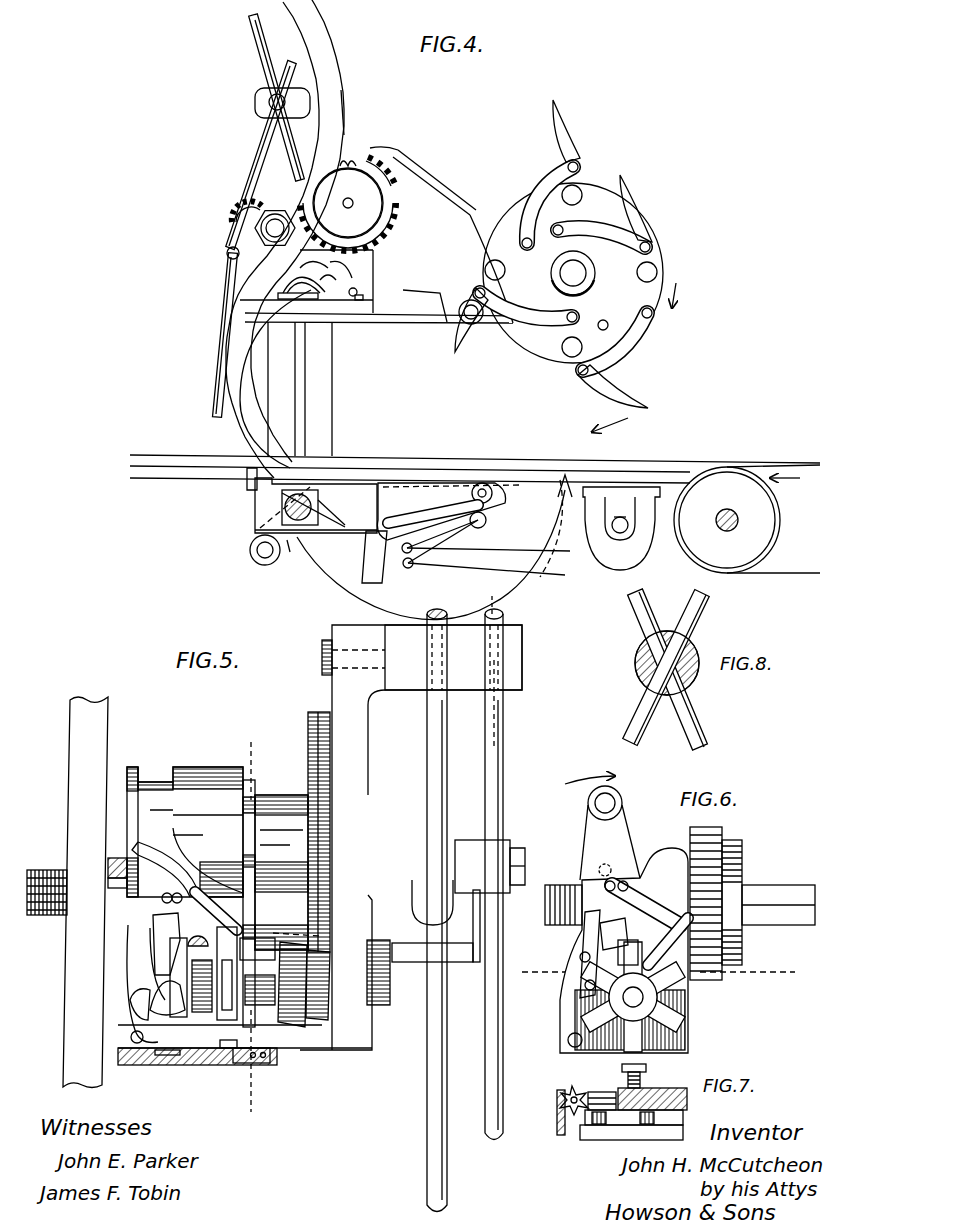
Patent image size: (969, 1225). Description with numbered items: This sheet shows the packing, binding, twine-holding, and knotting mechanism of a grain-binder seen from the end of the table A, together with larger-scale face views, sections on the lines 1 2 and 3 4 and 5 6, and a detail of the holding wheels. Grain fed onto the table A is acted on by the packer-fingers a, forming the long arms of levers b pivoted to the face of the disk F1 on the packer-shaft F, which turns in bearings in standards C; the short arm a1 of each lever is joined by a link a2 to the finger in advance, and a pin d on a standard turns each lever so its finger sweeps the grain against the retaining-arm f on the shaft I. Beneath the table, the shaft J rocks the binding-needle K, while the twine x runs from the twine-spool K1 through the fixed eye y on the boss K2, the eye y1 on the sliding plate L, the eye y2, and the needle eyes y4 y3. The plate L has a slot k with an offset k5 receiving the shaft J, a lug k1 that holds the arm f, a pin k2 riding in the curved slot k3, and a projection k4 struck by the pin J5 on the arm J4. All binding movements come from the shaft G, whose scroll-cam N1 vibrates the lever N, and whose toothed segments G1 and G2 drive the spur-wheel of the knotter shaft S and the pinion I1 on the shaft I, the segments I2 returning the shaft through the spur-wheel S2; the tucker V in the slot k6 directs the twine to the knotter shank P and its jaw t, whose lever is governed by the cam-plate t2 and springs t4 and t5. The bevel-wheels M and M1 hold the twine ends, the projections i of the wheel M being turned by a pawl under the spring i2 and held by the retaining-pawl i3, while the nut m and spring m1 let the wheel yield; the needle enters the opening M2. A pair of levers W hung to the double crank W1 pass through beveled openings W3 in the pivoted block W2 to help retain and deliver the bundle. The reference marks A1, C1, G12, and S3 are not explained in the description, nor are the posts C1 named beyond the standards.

In FIG. 4, the table A is at (475, 457).
In FIG. 4, the belt pulley A1 is at (747, 510).
In FIG. 4, the twine-spool K1 is at (621, 528).
In FIG. 4, the retaining-arm f is at (283, 239).
In FIG. 5, the retaining-arm f is at (85, 892).
In FIG. 4, the levers W is at (248, 216).
In FIG. 5, the levers W is at (459, 910).
In FIG. 8, the levers W is at (663, 669).
In FIG. 4, the shaft G is at (348, 203).
In FIG. 5, the shaft G is at (249, 903).
In FIG. 4, the toothed segment G1 is at (348, 189).
In FIG. 5, the toothed segment G1 is at (310, 832).
In FIG. 4, the scroll-cam N1 is at (348, 203).
In FIG. 5, the scroll-cam N1 is at (175, 832).
In FIG. 4, the toothed segment G2 is at (378, 199).
In FIG. 4, the shaft I is at (263, 223).
In FIG. 5, the shaft I is at (45, 870).
In FIG. 6, the shaft I is at (534, 905).
In FIG. 4, the standards C is at (376, 307).
In FIG. 5, the standards C is at (320, 845).
In FIG. 6, the standards C is at (552, 1010).
In FIG. 4, the frame posts C1 is at (300, 388).
In FIG. 5, the frame posts C1 is at (306, 1031).
In FIG. 4, the hooked shank P is at (307, 287).
In FIG. 5, the hooked shank P is at (153, 999).
In FIG. 4, the spring t4 is at (314, 260).
In FIG. 5, the spring t4 is at (198, 938).
In FIG. 4, the cam-plate t2 is at (344, 269).
In FIG. 5, the cam-plate t2 is at (214, 973).
In FIG. 4, the spring t5 is at (356, 290).
In FIG. 5, the spring t5 is at (200, 986).
In FIG. 4, the pin d is at (466, 306).
In FIG. 4, the disk F1 is at (573, 273).
In FIG. 4, the packer-shaft F is at (573, 273).
In FIG. 4, the link a2 is at (566, 268).
In FIG. 4, the short arm a1 is at (571, 271).
In FIG. 4, the levers b is at (570, 276).
In FIG. 4, the packer-fingers a is at (557, 254).
In FIG. 4, the sliding plate L is at (255, 507).
In FIG. 4, the shaft J is at (289, 507).
In FIG. 4, the lug k1 is at (243, 472).
In FIG. 4, the offset k5 is at (304, 472).
In FIG. 4, the slot k is at (318, 510).
In FIG. 4, the pin J5 is at (256, 550).
In FIG. 4, the arm J4 is at (294, 556).
In FIG. 4, the boss K2 is at (448, 511).
In FIG. 4, the pin k2 is at (475, 494).
In FIG. 4, the curved slot k3 is at (433, 514).
In FIG. 4, the projection k4 is at (374, 557).
In FIG. 4, the eye y1 is at (452, 537).
In FIG. 4, the fixed eye y is at (403, 552).
In FIG. 4, the eye y2 is at (409, 570).
In FIG. 4, the twine x is at (490, 558).
In FIG. 4, the eye y3 is at (555, 486).
In FIG. 4, the eye y4 is at (551, 533).
In FIG. 4, the binding-needle K is at (431, 555).
In FIG. 6, the binding-needle K is at (600, 932).
In FIG. 4, the section line 3 is at (492, 598).
In FIG. 5, the drum G12 is at (281, 872).
In FIG. 5, the section line 5 is at (250, 763).
In FIG. 5, the section line 6 is at (251, 1069).
In FIG. 5, the block W2 is at (453, 657).
In FIG. 8, the block W2 is at (636, 664).
In FIG. 5, the section line 4 is at (492, 707).
In FIG. 5, the double crank W1 is at (458, 901).
In FIG. 5, the lever N is at (146, 974).
In FIG. 6, the lever N is at (610, 833).
In FIG. 5, the opening M2 is at (166, 944).
In FIG. 6, the opening M2 is at (614, 934).
In FIG. 5, the clamping-jaw t is at (163, 977).
In FIG. 5, the spring i2 is at (199, 911).
In FIG. 6, the spring i2 is at (652, 908).
In FIG. 5, the pinion I1 is at (257, 949).
In FIG. 6, the pinion I1 is at (706, 903).
In FIG. 5, the horizontal shaft S is at (260, 990).
In FIG. 5, the spur-wheel S2 is at (296, 980).
In FIG. 5, the bevel gear S3 is at (318, 985).
In FIG. 5, the slot k6 is at (206, 1062).
In FIG. 5, the tucker V is at (179, 1074).
In FIG. 6, the bevel-wheel M is at (633, 997).
In FIG. 7, the bevel-wheel M is at (631, 1131).
In FIG. 6, the projections i is at (666, 943).
In FIG. 7, the projections i is at (599, 1121).
In FIG. 6, the bevel-wheel M1 is at (621, 952).
In FIG. 7, the bevel-wheel M1 is at (572, 1100).
In FIG. 6, the retaining-pawl i3 is at (605, 1045).
In FIG. 6, the toothed segments I2 is at (750, 948).
In FIG. 6, the section line 1 is at (538, 973).
In FIG. 6, the section line 2 is at (753, 973).
In FIG. 7, the nut m is at (641, 1075).
In FIG. 7, the spring m1 is at (652, 1092).
In FIG. 8, the beveled openings W3 is at (667, 663).